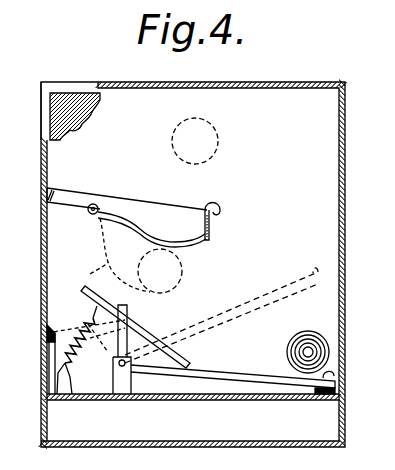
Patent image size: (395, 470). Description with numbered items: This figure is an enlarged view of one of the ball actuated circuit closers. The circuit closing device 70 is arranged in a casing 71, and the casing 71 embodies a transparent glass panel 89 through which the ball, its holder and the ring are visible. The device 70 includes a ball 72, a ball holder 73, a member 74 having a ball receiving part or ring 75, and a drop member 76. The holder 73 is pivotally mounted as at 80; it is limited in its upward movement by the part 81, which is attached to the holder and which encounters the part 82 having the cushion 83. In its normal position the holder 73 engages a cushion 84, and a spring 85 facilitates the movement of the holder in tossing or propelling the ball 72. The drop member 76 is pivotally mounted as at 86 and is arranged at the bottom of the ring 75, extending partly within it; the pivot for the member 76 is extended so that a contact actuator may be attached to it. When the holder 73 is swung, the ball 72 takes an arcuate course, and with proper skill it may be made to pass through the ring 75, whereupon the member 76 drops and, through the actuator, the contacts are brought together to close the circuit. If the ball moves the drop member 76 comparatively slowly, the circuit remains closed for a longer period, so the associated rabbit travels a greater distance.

The circuit closing device 70 is at (58, 263).
The casing 71 is at (346, 250).
The ball 72 is at (322, 349).
The ball holder 73 is at (231, 312).
The member 74 is at (105, 203).
The ring 75 is at (210, 236).
The drop member 76 is at (160, 230).
The pivot 80 is at (118, 361).
The part 81 is at (148, 333).
The part 82 is at (48, 362).
The cushion 83 is at (47, 332).
The cushion 84 is at (322, 397).
The spring 85 is at (70, 394).
The pivot 86 is at (91, 213).
The transparent glass panel 89 is at (90, 117).